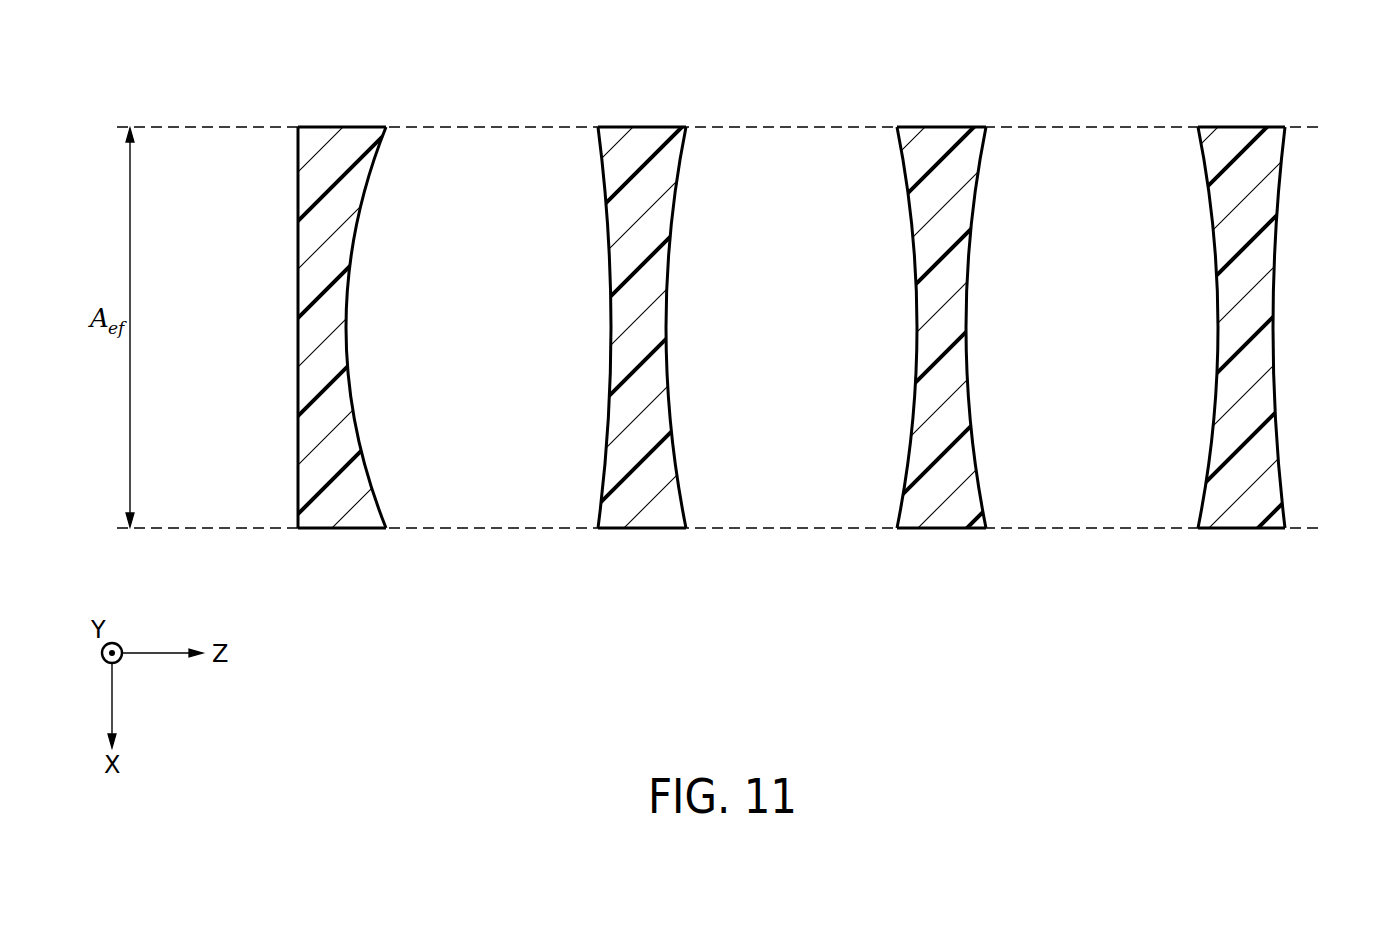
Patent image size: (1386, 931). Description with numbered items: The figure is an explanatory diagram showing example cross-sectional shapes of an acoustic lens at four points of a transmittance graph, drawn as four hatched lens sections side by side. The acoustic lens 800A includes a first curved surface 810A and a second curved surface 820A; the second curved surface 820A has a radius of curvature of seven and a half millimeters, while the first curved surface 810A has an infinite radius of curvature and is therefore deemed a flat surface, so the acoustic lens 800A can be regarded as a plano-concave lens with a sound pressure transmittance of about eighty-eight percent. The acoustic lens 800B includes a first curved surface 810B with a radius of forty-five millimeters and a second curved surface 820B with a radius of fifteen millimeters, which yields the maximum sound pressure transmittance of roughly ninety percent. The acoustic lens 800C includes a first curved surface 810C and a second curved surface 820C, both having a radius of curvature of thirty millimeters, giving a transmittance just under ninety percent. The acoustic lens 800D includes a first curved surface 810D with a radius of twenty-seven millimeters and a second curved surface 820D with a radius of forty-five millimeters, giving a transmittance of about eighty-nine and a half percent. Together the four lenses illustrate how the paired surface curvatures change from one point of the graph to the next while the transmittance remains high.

The acoustic lens 800A is at (342, 136).
The first curved surface 810A is at (298, 311).
The second curved surface 820A is at (347, 309).
The acoustic lens 800B is at (640, 136).
The first curved surface 810B is at (610, 305).
The second curved surface 820B is at (667, 307).
The acoustic lens 800C is at (940, 136).
The first curved surface 810C is at (916, 305).
The second curved surface 820C is at (967, 307).
The acoustic lens 800D is at (1244, 136).
The first curved surface 810D is at (1217, 305).
The second curved surface 820D is at (1274, 307).